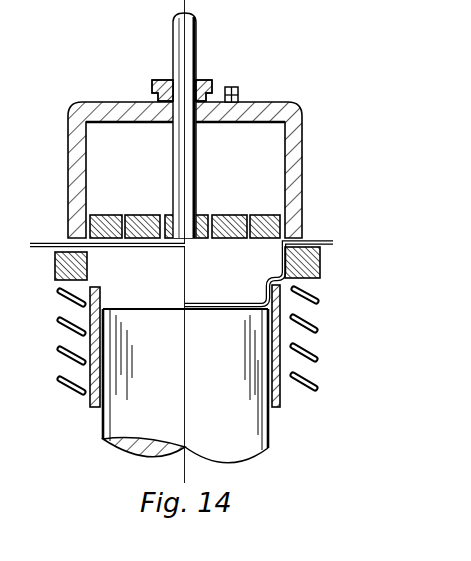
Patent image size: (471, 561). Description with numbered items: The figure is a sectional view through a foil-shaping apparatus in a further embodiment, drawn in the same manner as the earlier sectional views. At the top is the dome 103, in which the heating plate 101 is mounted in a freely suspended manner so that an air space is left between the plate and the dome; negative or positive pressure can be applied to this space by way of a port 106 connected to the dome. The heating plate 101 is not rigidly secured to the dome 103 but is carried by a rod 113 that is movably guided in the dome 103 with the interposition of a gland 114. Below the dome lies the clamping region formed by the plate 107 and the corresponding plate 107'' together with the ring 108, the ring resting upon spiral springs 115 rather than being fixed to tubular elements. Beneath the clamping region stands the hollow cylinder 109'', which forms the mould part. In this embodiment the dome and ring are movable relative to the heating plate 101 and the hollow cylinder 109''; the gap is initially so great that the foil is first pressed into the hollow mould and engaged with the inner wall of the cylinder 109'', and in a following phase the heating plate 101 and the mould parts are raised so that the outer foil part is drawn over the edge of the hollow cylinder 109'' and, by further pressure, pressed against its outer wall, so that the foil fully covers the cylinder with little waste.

The heating plate 101 is at (298, 207).
The dome 103 is at (297, 108).
The port 106 is at (236, 87).
The plate 107 is at (100, 242).
The plate 107'' is at (283, 257).
The block 108 is at (322, 270).
The hollow cylinder 109'' is at (222, 374).
The rod 113 is at (197, 29).
The gland 114 is at (155, 79).
The spiral springs 115 is at (318, 331).